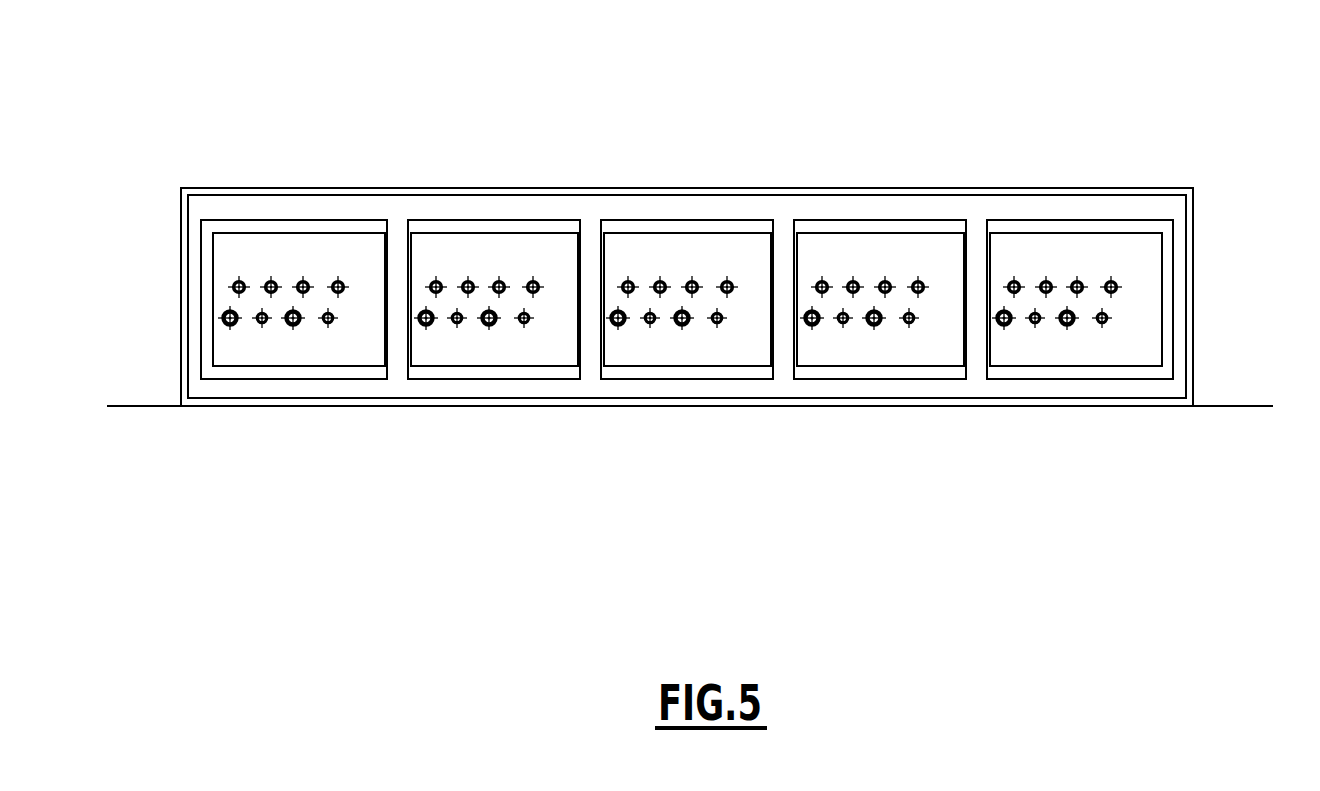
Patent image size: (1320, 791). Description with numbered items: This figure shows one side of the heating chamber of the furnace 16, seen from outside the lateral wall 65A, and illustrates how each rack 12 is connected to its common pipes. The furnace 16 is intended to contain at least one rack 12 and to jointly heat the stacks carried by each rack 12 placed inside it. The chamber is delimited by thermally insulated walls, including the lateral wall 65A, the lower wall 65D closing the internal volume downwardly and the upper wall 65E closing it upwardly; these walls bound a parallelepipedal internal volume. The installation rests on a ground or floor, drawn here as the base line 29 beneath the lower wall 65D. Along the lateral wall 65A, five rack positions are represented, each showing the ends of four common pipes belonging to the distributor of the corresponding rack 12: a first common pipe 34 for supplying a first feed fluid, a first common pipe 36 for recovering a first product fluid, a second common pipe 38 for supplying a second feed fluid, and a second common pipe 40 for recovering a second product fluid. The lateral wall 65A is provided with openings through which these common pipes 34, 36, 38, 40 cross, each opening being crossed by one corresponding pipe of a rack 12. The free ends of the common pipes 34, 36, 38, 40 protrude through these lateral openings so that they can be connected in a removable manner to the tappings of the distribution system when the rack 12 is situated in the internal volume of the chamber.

The rack 12 is at (310, 182).
The furnace 16 is at (1237, 268).
The ground surface 29 is at (1237, 406).
The first common pipe for supplying a first feed fluid 34 is at (232, 326).
The first common pipe for recovering a first product fluid 36 is at (238, 282).
The second common pipe for supplying a second feed fluid 38 is at (270, 282).
The second common pipe for recovering a second product fluid 40 is at (263, 326).
The lateral wall 65A is at (197, 210).
The lower wall 65D is at (897, 402).
The upper wall 65E is at (880, 195).